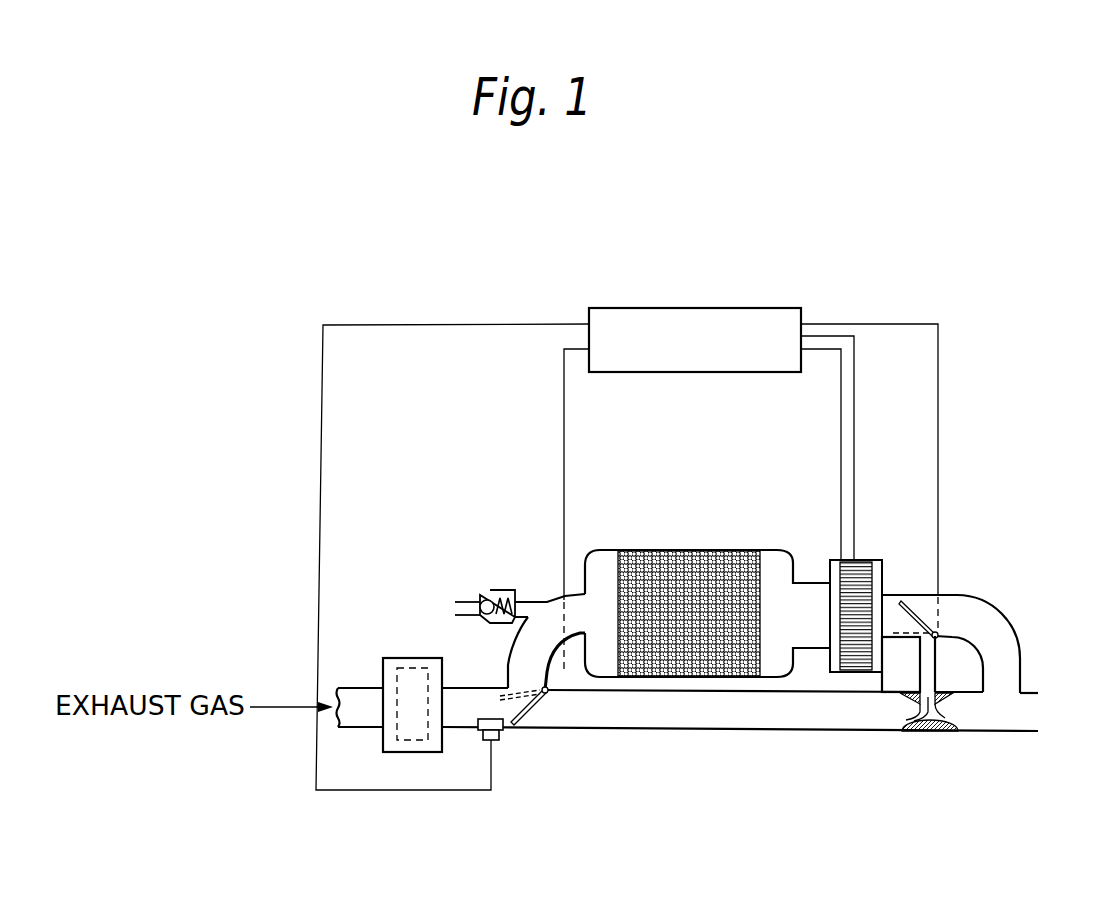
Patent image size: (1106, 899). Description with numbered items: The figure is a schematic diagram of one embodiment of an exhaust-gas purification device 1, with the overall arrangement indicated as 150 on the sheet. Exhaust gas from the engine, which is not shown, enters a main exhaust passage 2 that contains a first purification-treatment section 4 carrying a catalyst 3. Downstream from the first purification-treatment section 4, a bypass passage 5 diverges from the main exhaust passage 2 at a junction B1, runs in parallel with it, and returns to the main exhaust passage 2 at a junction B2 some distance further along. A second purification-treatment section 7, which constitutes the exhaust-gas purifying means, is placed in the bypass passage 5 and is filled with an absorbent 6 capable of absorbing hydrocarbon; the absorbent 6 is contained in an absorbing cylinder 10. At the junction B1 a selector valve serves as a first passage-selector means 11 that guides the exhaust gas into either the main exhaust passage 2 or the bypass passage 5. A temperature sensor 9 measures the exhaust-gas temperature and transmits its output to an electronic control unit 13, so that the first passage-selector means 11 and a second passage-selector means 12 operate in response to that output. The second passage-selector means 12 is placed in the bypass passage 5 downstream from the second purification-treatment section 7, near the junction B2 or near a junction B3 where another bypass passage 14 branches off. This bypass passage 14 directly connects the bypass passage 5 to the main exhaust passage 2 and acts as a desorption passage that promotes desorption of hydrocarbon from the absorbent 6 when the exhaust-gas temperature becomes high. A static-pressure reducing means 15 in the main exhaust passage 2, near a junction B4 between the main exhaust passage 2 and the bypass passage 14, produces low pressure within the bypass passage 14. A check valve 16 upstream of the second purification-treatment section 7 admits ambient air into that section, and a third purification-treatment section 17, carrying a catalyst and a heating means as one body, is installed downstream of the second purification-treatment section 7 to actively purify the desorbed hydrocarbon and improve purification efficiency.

The exhaust-gas purification device 1 is at (1003, 460).
The main exhaust passage 2 is at (458, 728).
The catalyst 3 is at (418, 668).
The first purification-treatment section 4 is at (383, 681).
The bypass passage 5 is at (546, 600).
The absorbent 6 is at (705, 558).
The second purification-treatment section 7 is at (776, 551).
The temperature sensor 9 is at (498, 741).
The absorbing cylinder 10 is at (612, 550).
The first passage-selector means 11 is at (533, 710).
The second passage-selector means 12 is at (917, 598).
The electronic control unit 13 is at (705, 308).
The bypass passage (desorption passage) 14 is at (927, 670).
The static-pressure reducing means 15 is at (928, 732).
The check valve 16 is at (488, 590).
The third purification-treatment section 17 is at (870, 558).
The exhaust gas purifying apparatus 150 is at (441, 558).
The junction B1 is at (522, 688).
The junction B2 is at (1002, 687).
The junction B3 is at (923, 640).
The junction B4 is at (897, 725).